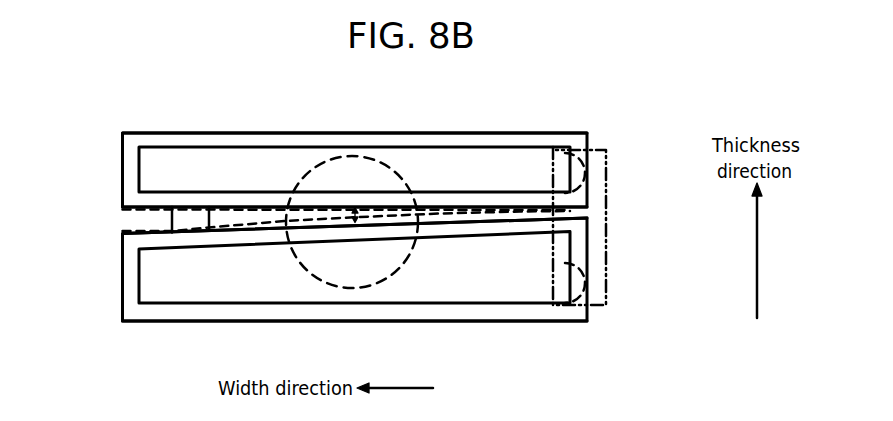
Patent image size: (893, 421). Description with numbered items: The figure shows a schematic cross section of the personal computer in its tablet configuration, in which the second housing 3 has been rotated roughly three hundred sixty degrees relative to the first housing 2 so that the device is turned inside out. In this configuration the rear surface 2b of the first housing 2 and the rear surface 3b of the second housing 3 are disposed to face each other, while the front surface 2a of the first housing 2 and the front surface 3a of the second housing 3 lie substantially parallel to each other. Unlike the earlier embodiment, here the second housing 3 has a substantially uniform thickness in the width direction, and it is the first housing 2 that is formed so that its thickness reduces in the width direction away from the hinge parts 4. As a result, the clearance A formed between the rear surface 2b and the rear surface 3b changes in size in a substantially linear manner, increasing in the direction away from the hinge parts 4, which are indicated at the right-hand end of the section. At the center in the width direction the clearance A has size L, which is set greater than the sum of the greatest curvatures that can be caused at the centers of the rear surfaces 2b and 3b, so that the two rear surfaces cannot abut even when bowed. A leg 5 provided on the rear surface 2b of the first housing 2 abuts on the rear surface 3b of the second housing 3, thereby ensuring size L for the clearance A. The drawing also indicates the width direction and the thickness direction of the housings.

The first housing 2 is at (623, 276).
The front surface of first housing 2a is at (520, 322).
The rear surface of first housing 2b is at (490, 218).
The second housing 3 is at (623, 167).
The front surface of second housing 3a is at (523, 132).
The rear surface of second housing 3b is at (537, 209).
The hinge parts 4 is at (605, 303).
The leg 5 is at (172, 217).
The clearance A is at (290, 263).
The size of clearance at center L is at (352, 210).